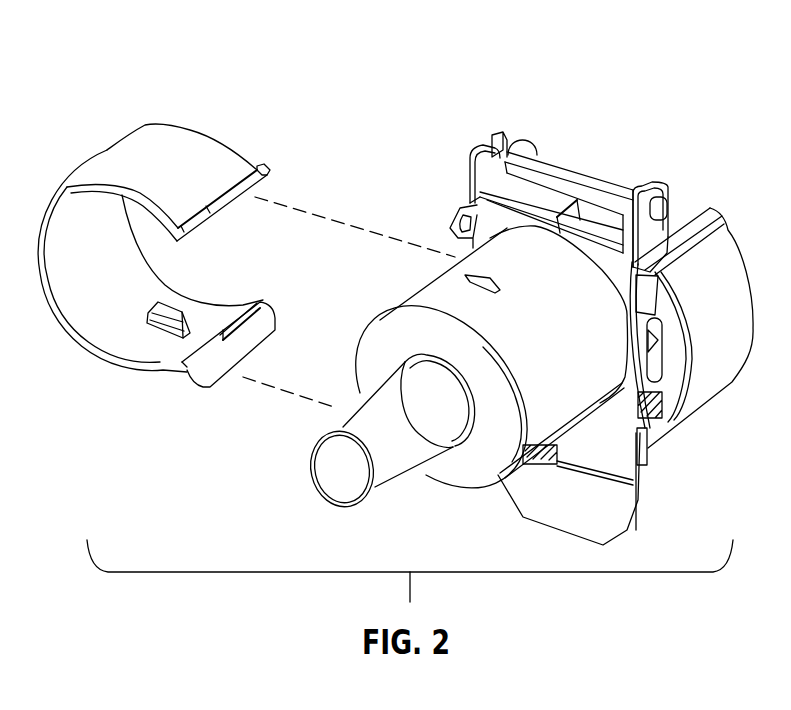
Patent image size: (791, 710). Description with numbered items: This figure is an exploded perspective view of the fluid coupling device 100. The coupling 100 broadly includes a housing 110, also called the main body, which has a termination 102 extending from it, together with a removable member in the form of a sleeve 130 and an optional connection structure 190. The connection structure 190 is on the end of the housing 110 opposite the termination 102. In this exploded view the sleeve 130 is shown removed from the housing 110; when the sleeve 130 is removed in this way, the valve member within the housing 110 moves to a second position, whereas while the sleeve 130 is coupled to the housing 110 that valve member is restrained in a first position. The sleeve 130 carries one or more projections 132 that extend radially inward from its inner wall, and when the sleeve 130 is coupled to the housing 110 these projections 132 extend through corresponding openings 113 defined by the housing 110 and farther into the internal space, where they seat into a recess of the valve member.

The fluid coupling device 100 is at (450, 84).
The termination 102 is at (387, 491).
The housing 110 is at (414, 296).
The openings 113 is at (462, 277).
The sleeve 130 is at (147, 126).
The projections 132 is at (148, 313).
The connection structure 190 is at (680, 207).